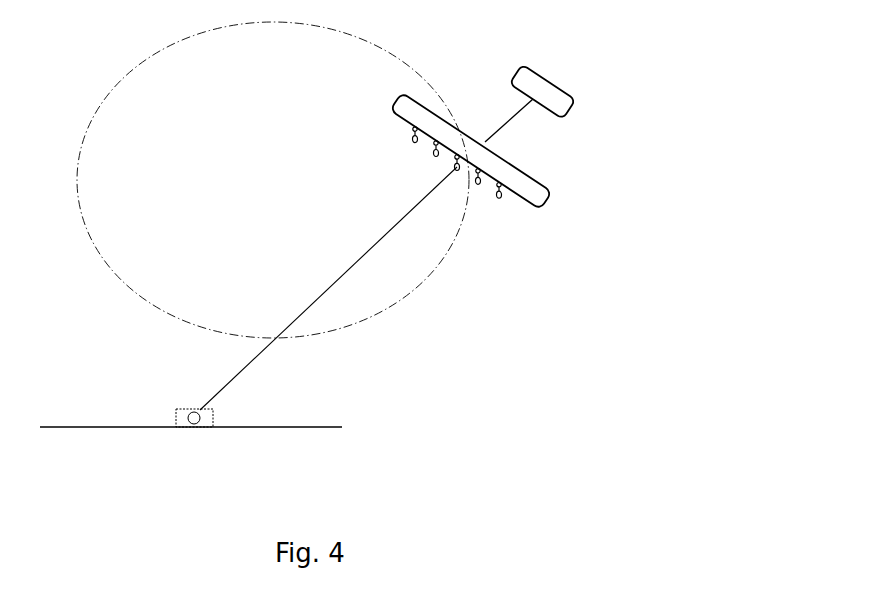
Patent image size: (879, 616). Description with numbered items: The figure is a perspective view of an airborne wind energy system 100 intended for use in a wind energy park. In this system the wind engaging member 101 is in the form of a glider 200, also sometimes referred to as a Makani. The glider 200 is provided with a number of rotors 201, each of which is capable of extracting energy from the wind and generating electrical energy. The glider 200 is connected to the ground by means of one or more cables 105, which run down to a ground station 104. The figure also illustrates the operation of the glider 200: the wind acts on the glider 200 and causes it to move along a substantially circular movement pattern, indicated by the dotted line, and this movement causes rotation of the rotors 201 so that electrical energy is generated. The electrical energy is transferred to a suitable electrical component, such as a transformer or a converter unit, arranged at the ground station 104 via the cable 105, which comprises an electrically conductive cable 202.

The airborne wind energy system 100 is at (132, 322).
The wind engaging member 101 is at (564, 136).
The glider 200 is at (532, 169).
The ground station 104 is at (175, 420).
The cable 105 is at (328, 288).
The electrically conductive cable 202 is at (322, 295).
The rotors 201 is at (434, 154).